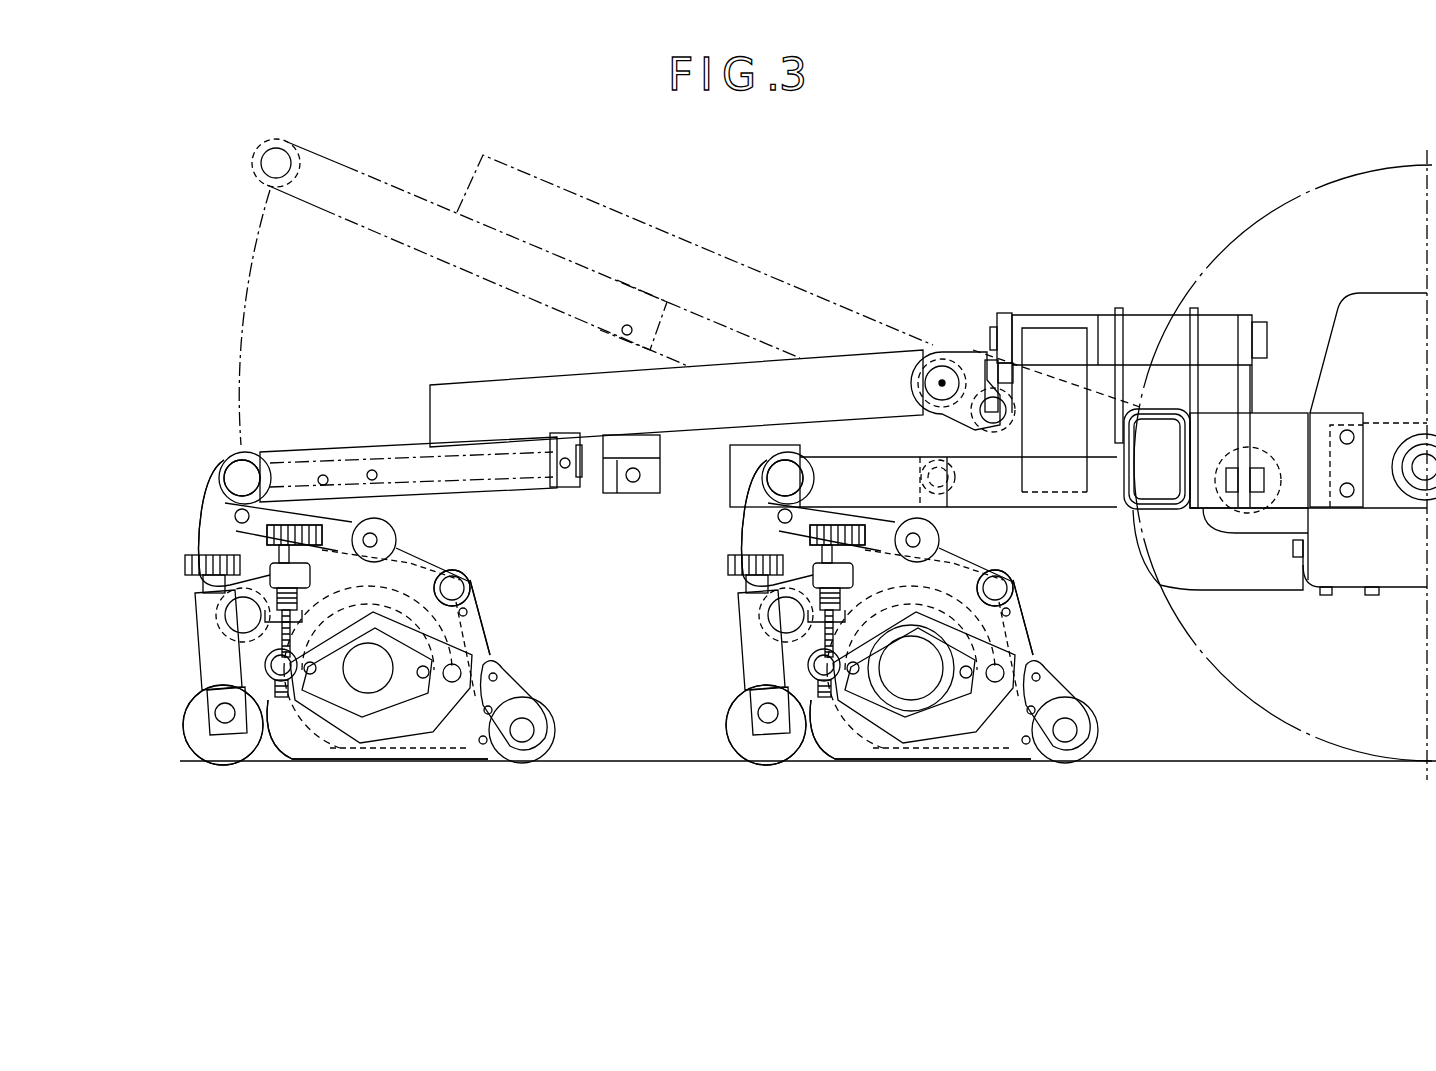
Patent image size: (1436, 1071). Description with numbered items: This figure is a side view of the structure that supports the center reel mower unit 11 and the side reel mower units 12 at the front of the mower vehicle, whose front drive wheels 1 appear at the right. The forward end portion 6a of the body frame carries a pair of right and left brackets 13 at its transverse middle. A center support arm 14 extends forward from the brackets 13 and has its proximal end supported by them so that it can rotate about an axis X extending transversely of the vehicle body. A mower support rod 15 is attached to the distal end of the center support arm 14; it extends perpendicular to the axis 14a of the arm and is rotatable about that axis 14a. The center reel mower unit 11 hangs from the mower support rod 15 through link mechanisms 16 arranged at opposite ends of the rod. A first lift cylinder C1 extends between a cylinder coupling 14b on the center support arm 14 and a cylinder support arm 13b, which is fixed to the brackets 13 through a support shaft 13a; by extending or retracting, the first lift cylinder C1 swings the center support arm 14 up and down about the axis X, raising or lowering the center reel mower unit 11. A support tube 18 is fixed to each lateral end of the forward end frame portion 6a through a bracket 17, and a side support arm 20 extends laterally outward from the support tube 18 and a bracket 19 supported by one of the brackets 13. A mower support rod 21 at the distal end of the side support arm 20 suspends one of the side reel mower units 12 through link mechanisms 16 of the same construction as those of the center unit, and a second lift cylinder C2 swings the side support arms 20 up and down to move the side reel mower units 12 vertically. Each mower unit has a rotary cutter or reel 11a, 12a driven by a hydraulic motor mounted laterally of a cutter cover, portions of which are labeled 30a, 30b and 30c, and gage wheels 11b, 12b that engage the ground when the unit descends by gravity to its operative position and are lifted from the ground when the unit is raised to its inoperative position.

The drive wheels 1 is at (1263, 222).
The forward end portion of body frame 6a is at (1130, 510).
The center reel mower unit 11 is at (540, 681).
The rotary cutter or reel 11a is at (318, 750).
The gage wheels 11b is at (226, 750).
The side reel mower unit 12 is at (1070, 680).
The rotary cutter or reel 12a is at (866, 750).
The gage wheels 12b is at (770, 750).
The brackets 13 is at (977, 365).
The support shaft 13a is at (992, 420).
The cylinder support arm 13b is at (1095, 497).
The center support arm 14 is at (630, 216).
The axis of center support arm 14a is at (490, 472).
The cylinder coupling 14b is at (605, 478).
The mower support rod 15 is at (246, 476).
The link mechanisms 16 is at (204, 478).
The bracket 17 is at (1194, 308).
The support tube 18 is at (1225, 326).
The bracket 19 is at (1003, 313).
The side support arm 20 is at (1055, 340).
The mower support rod 21 is at (783, 478).
The pivot pin of link 30a is at (447, 560).
The link 30b is at (478, 625).
The adjusting screw 30c is at (467, 637).
The axis X is at (940, 384).
The first lift cylinder C1 is at (745, 460).
The second lift cylinder C2 is at (1247, 518).